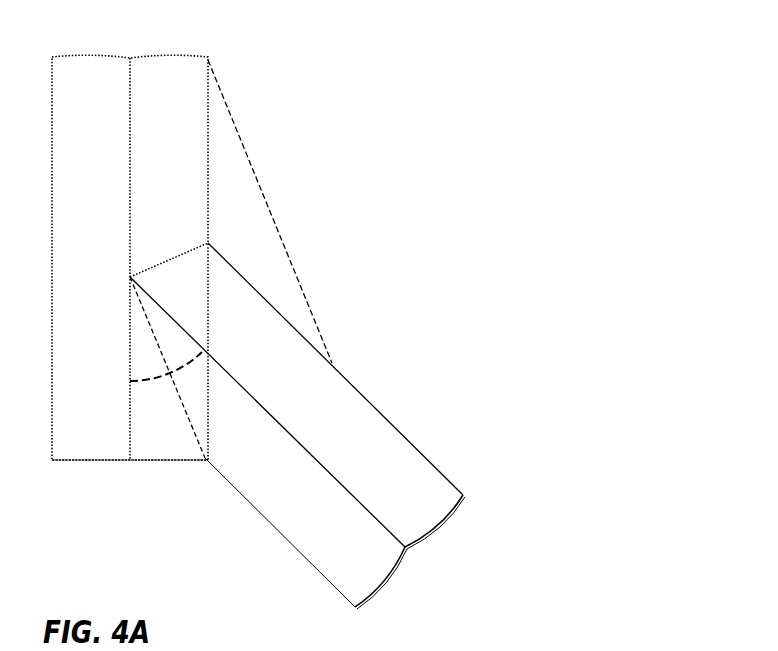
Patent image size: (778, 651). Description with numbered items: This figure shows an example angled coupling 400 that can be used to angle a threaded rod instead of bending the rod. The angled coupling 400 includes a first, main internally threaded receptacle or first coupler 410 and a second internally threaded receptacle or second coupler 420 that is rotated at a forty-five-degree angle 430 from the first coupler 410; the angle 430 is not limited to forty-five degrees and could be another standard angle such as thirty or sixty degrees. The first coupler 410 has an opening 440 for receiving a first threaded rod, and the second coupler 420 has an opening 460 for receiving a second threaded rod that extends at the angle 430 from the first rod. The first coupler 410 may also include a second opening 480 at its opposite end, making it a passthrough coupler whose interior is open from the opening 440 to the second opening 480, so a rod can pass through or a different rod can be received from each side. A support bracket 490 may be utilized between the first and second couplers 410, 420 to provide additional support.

The angled coupling 400 is at (507, 131).
The first coupler 410 is at (170, 100).
The second coupler 420 is at (403, 465).
The angle 430 is at (167, 377).
The opening 440 is at (138, 40).
The opening 460 is at (438, 575).
The second opening 480 is at (128, 487).
The support bracket 490 is at (263, 223).